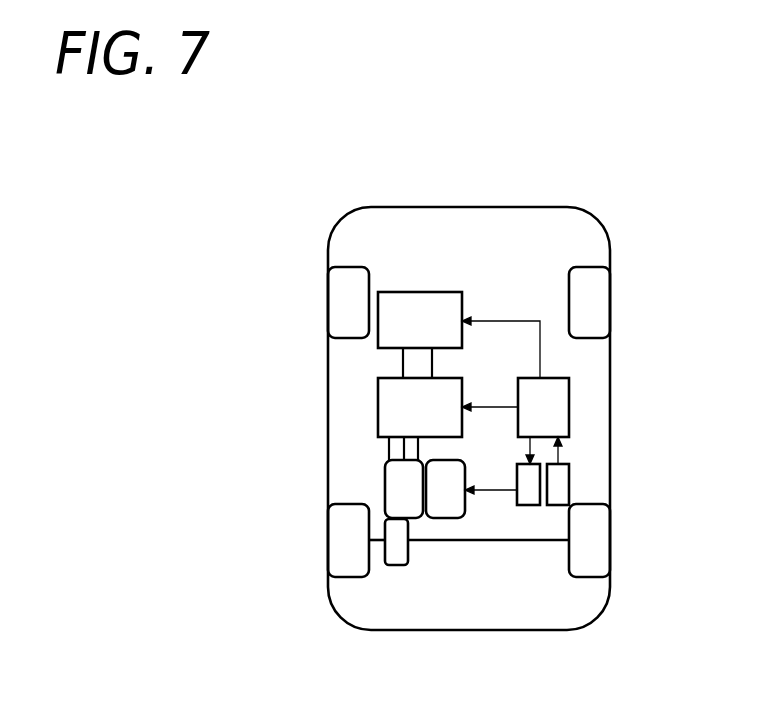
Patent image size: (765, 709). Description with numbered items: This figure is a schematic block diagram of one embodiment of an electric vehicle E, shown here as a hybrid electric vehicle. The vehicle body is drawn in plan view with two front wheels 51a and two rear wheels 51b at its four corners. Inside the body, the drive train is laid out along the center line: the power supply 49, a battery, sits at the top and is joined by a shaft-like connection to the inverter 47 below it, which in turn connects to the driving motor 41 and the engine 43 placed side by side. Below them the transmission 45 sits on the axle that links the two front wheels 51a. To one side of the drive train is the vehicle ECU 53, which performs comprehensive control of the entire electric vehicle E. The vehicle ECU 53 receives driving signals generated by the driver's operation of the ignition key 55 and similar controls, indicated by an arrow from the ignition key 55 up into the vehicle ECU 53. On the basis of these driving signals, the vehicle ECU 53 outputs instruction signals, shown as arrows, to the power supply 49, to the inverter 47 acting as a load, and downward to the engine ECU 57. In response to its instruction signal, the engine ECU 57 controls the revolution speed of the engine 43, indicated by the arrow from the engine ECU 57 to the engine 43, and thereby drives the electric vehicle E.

The electric vehicle E is at (576, 194).
The driving motor 41 is at (388, 475).
The engine 43 is at (460, 475).
The transmission 45 is at (393, 559).
The inverter 47 is at (380, 392).
The power supply 49 is at (397, 292).
The front wheels 51a is at (331, 528).
The rear wheels 51b is at (333, 285).
The vehicle ECU 53 is at (565, 382).
The ignition key 55 is at (567, 475).
The engine ECU 57 is at (520, 495).